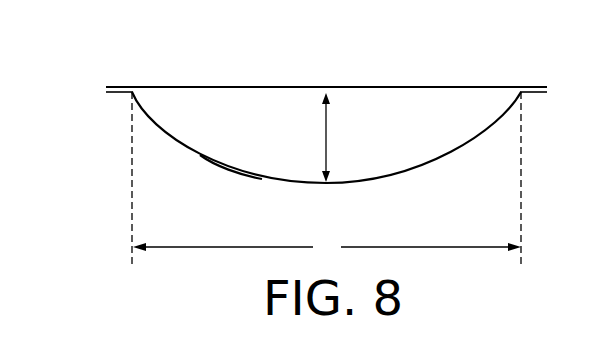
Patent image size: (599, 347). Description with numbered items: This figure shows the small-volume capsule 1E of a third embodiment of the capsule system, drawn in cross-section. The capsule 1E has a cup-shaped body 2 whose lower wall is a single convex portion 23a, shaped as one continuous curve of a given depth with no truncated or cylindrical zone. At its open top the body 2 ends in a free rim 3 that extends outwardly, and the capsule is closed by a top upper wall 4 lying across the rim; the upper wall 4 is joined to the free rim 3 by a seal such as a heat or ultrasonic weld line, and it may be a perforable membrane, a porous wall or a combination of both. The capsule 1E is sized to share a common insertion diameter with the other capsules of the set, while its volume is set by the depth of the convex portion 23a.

The capsule 1E is at (100, 138).
The body 2 is at (448, 153).
The free rim 3 is at (535, 93).
The top upper wall 4 is at (428, 86).
The convex portion 23a is at (232, 168).